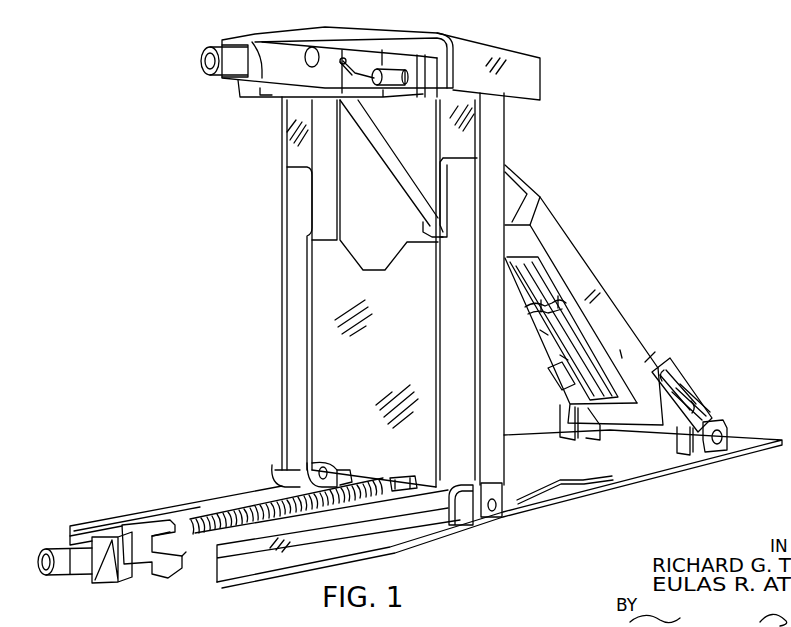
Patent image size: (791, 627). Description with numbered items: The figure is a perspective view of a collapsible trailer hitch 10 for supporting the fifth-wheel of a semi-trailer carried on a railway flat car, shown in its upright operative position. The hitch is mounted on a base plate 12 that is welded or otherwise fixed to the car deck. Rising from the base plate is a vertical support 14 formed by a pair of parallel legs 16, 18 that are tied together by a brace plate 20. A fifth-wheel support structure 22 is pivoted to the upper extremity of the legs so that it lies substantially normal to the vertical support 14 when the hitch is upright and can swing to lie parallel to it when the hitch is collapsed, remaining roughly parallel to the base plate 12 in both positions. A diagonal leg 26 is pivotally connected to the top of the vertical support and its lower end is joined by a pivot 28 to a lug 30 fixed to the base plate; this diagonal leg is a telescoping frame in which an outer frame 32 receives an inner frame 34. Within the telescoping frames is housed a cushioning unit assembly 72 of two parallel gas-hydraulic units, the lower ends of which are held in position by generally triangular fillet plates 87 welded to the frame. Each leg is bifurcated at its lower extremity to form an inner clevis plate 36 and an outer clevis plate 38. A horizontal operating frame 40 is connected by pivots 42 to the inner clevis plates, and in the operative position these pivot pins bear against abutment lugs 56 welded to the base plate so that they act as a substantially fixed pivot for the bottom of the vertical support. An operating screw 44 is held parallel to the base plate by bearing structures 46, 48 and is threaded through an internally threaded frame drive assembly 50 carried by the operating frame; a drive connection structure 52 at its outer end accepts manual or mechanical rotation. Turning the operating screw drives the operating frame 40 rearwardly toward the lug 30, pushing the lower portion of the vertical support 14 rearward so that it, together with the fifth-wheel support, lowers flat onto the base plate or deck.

The trailer hitch 10 is at (266, 347).
The base plate 12 is at (646, 472).
The vertical support 14 is at (291, 155).
The leg 16 is at (298, 221).
The leg 18 is at (495, 146).
The brace plate 20 is at (332, 394).
The fifth-wheel support structure 22 is at (316, 37).
The diagonal leg 26 is at (657, 339).
The pivot 28 is at (719, 452).
The lug 30 is at (727, 432).
The outer frame 32 is at (563, 256).
The inner frame 34 is at (510, 197).
The inner clevis plate 36 is at (330, 462).
The outer clevis plate 38 is at (502, 518).
The horizontal operating frame 40 is at (236, 575).
The pivot 42 is at (340, 470).
The operating screw 44 is at (216, 505).
The bearing structure 46 is at (126, 582).
The bearing structure 48 is at (410, 478).
The frame drive assembly 50 is at (165, 520).
The drive connection structure 52 is at (64, 576).
The abutment lug 56 is at (275, 470).
The cushioning unit assembly 72 is at (580, 313).
The fillet plate 87 is at (620, 390).